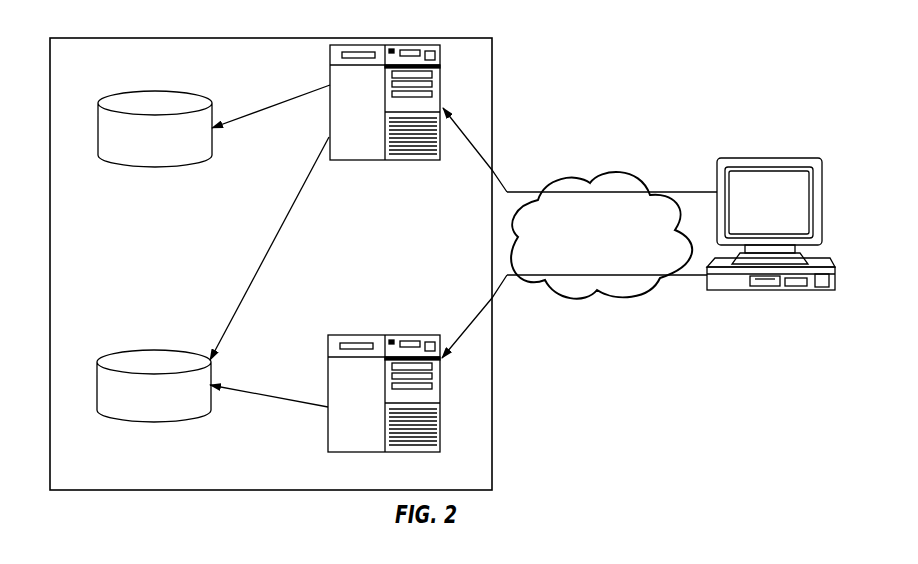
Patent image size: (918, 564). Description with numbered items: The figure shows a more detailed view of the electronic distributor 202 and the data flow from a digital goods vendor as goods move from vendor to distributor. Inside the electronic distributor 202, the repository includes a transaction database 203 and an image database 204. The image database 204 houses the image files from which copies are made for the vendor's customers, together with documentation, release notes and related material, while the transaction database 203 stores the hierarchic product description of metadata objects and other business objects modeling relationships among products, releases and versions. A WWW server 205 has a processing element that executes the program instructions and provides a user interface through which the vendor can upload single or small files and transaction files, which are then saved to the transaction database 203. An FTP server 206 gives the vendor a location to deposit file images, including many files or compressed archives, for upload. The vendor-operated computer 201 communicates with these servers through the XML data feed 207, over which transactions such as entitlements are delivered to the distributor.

The vendor-operated computer 201 is at (787, 158).
The electronic distributor 202 is at (100, 38).
The transaction database 203 is at (121, 92).
The image database 204 is at (118, 350).
The WWW server 205 is at (330, 65).
The FTP server 206 is at (328, 357).
The XML data feed 207 is at (630, 174).